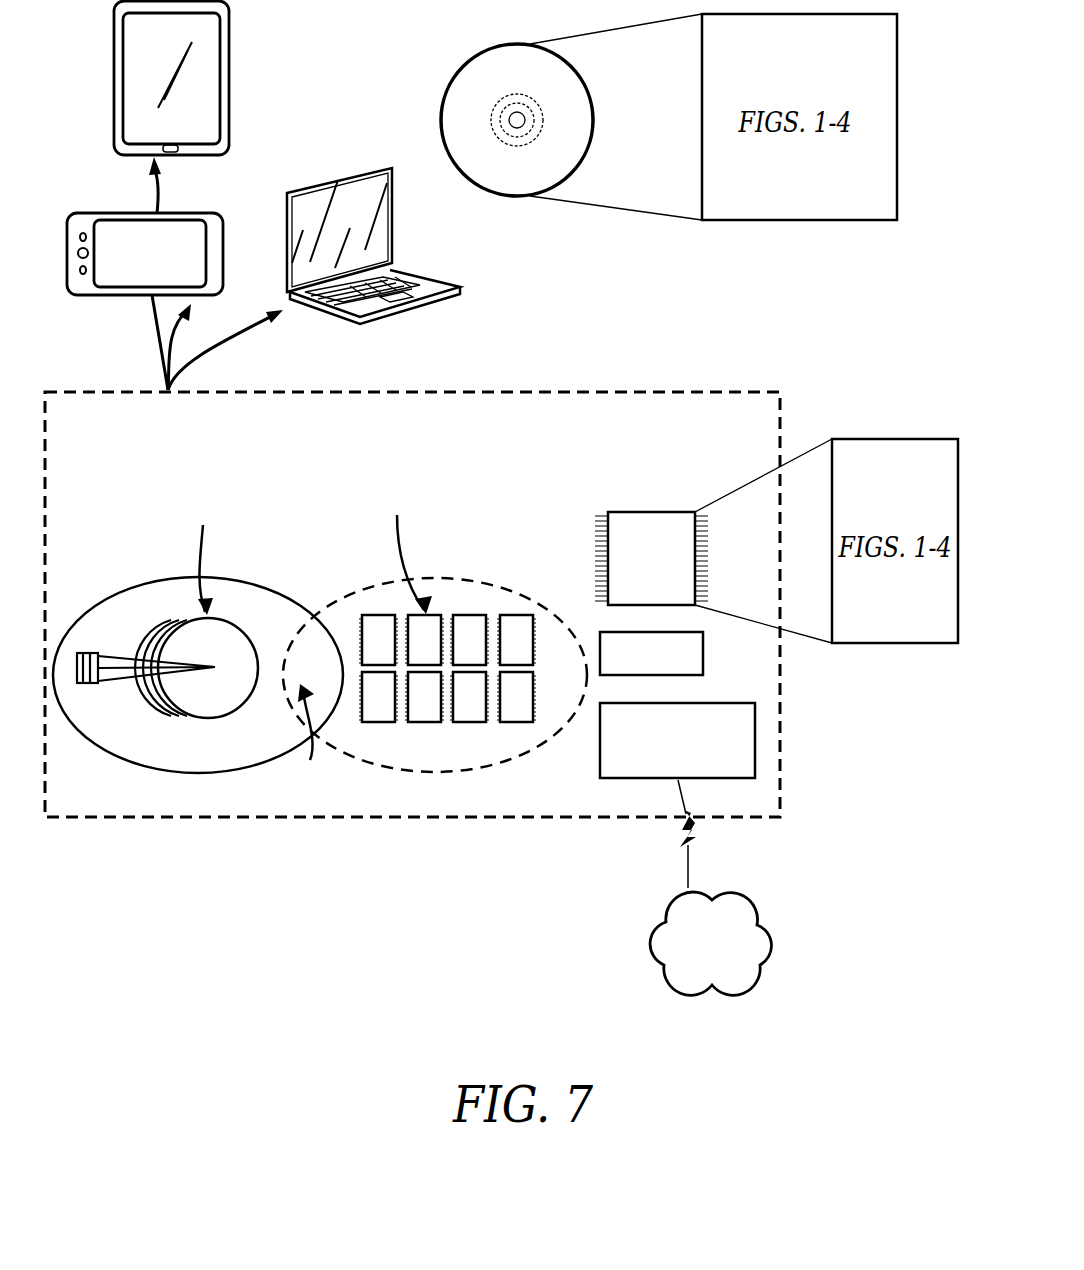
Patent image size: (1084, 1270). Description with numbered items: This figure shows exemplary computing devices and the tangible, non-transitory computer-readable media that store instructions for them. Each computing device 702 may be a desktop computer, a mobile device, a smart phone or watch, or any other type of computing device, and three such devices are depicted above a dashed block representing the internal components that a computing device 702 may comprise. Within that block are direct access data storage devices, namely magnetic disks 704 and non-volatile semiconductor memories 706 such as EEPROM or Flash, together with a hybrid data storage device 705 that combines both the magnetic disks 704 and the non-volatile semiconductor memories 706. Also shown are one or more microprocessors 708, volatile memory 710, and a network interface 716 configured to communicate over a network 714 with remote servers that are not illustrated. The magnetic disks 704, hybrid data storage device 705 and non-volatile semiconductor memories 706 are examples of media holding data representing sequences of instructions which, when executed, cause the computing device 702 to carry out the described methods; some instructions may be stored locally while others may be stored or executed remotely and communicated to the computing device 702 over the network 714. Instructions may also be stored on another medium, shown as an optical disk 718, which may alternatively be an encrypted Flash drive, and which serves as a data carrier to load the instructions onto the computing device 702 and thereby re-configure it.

The computing device 702 is at (232, 64).
The magnetic disks 704 is at (233, 622).
The hybrid data storage device 705 is at (302, 655).
The non-volatile semiconductor memories 706 is at (465, 615).
The microprocessors 708 is at (638, 512).
The volatile memory 710 is at (703, 650).
The network 714 is at (765, 913).
The network interface 716 is at (600, 770).
The optical disk 718 is at (441, 120).